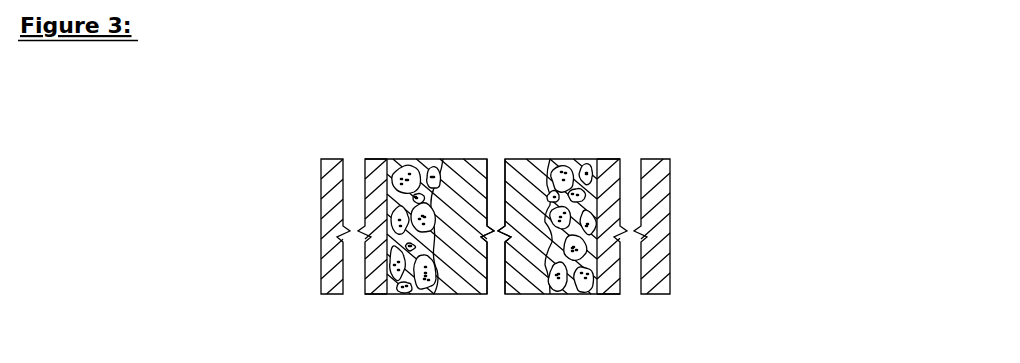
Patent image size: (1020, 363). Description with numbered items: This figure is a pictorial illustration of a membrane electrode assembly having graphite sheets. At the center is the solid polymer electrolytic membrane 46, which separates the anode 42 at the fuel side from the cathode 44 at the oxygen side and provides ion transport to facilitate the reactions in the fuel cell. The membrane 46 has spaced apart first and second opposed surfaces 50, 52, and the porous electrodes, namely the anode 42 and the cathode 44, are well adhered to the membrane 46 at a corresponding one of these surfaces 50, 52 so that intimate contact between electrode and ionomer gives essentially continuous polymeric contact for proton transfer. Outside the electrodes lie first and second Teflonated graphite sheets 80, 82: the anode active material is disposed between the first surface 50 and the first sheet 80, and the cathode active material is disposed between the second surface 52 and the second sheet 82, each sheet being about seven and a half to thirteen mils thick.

The first Teflonated graphite sheet 80 is at (336, 158).
The first surface of the membrane 50 is at (453, 158).
The anode 42 is at (415, 296).
The solid polymer electrolytic membrane 46 is at (517, 158).
The second surface of the membrane 52 is at (542, 158).
The cathode 44 is at (573, 296).
The second Teflonated graphite sheet 82 is at (648, 158).